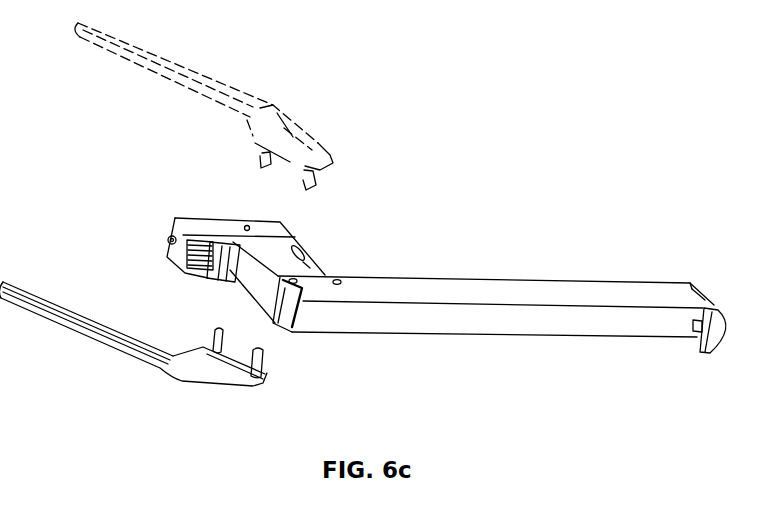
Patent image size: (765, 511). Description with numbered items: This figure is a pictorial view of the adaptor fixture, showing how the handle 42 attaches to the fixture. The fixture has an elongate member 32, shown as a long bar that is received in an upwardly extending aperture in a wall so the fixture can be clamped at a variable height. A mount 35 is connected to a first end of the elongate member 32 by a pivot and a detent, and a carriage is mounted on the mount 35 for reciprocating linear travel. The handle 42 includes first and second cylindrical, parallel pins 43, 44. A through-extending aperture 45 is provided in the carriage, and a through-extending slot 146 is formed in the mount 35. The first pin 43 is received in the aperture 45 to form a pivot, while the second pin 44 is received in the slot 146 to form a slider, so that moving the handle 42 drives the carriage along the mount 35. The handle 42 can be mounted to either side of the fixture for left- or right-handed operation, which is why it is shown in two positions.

The elongate member 32 is at (548, 330).
The mount 35 is at (308, 261).
The handle 42 is at (313, 128).
The first pin 43 is at (206, 338).
The second pin 44 is at (262, 358).
The through-extending aperture 45 is at (247, 226).
The through-extending slot 146 is at (300, 250).